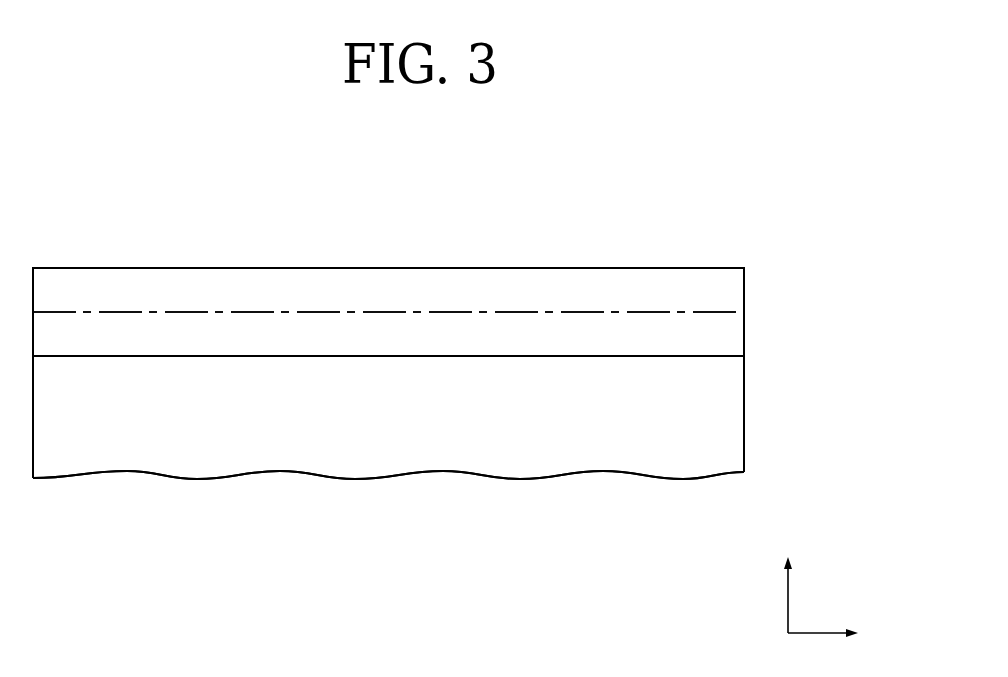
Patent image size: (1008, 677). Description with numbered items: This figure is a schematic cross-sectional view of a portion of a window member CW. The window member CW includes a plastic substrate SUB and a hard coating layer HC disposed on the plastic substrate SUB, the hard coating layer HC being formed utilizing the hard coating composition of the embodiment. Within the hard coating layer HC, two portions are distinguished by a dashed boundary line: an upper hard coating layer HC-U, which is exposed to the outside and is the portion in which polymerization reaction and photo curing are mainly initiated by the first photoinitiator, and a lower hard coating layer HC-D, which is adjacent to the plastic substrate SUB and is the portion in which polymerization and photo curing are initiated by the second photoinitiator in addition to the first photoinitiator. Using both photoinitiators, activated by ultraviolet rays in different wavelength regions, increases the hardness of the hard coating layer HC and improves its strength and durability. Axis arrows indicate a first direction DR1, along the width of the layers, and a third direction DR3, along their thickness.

The window member CW is at (693, 198).
The hard coating layer HC is at (847, 265).
The upper hard coating layer HC-U is at (733, 282).
The lower hard coating layer HC-D is at (733, 338).
The plastic substrate SUB is at (733, 420).
The first direction DR1 is at (843, 632).
The third direction DR3 is at (789, 580).